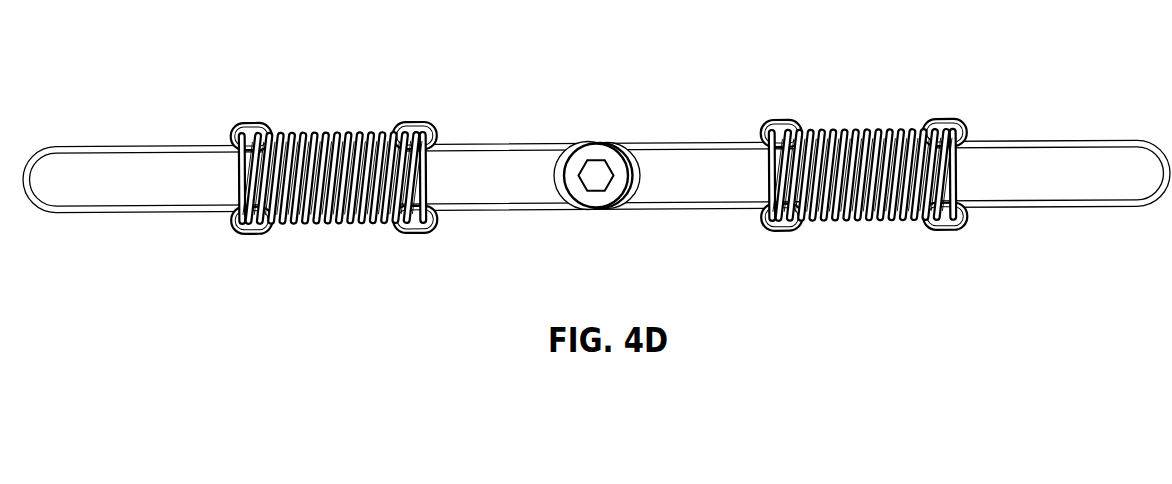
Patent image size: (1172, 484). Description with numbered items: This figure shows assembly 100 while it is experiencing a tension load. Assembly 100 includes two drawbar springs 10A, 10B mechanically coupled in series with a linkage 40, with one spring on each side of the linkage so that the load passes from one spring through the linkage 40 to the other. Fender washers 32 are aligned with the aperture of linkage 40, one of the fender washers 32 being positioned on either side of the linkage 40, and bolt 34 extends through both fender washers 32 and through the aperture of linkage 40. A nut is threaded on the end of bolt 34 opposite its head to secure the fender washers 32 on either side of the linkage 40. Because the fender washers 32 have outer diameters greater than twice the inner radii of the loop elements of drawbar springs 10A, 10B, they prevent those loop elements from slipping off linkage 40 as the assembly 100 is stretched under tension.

The assembly 100 is at (163, 79).
The drawbar spring 10A is at (288, 86).
The drawbar spring 10B is at (986, 110).
The linkage 40 is at (558, 177).
The fender washers 32 is at (597, 148).
The bolt 34 is at (596, 176).